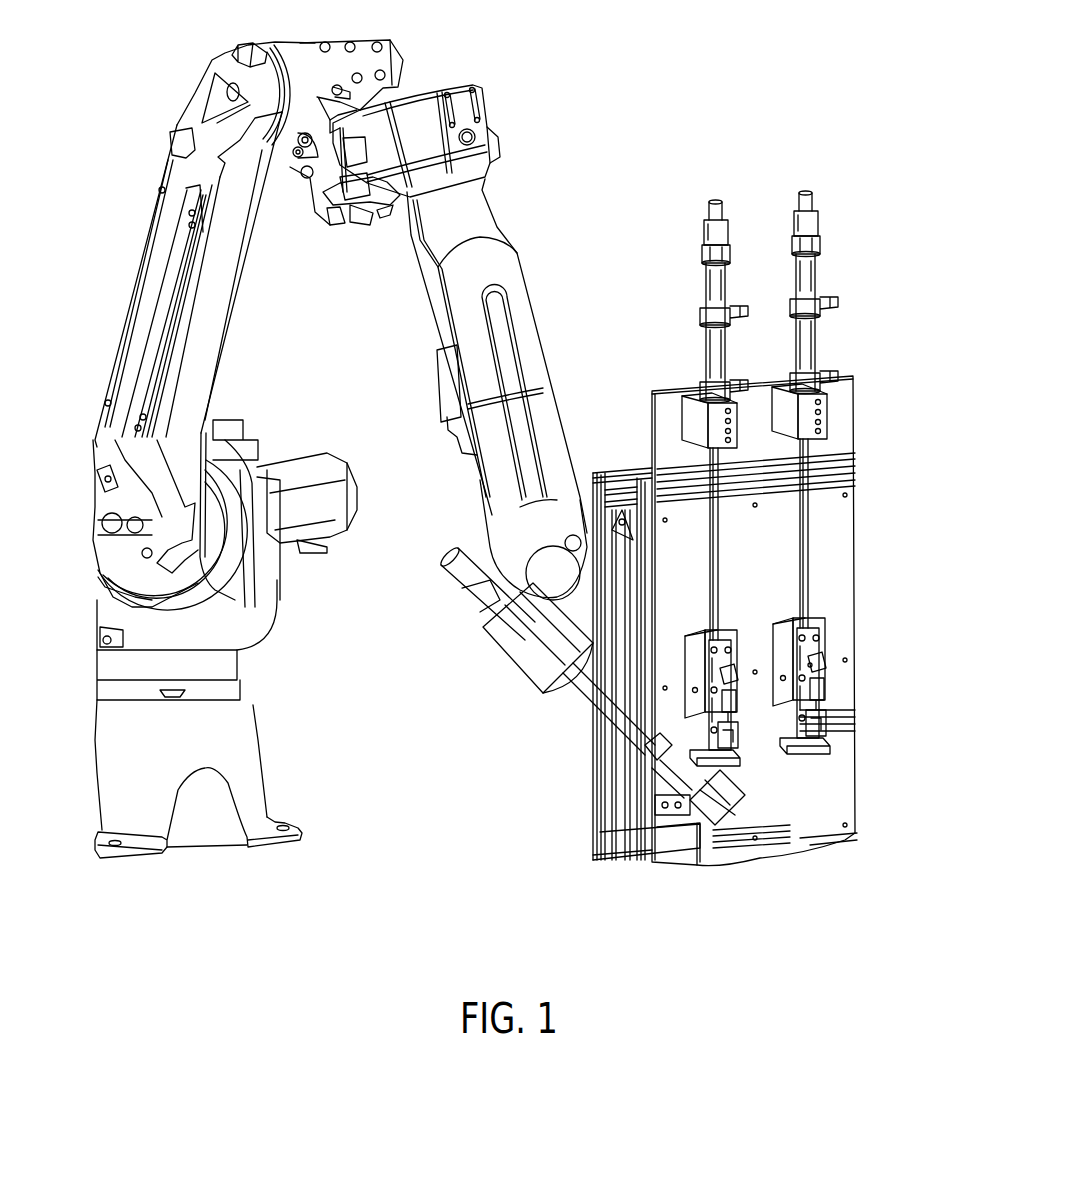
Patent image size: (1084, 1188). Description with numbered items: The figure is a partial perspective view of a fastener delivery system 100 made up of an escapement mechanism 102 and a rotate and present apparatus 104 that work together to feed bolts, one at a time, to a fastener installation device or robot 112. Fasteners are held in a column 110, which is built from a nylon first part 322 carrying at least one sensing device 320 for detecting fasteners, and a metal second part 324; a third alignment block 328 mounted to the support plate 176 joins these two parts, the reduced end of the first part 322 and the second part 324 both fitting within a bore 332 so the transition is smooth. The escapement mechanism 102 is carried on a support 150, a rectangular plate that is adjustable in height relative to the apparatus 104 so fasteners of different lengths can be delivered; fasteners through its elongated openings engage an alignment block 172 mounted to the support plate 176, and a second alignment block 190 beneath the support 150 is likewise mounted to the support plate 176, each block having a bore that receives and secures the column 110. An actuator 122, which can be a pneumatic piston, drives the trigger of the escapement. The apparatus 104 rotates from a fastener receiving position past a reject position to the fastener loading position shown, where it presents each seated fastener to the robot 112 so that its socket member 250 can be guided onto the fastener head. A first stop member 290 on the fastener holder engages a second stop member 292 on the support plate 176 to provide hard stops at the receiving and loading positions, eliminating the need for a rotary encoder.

The fastener delivery system 100 is at (632, 930).
The escapement mechanism 102 is at (840, 598).
The rotate and present apparatus 104 is at (742, 820).
The column 110 is at (720, 554).
The fastener installation device or robot 112 is at (390, 632).
The actuator 122 is at (735, 693).
The support 150 is at (722, 652).
The alignment block 172 is at (700, 632).
The support plate 176 is at (848, 433).
The second alignment block 190 is at (693, 752).
The socket member 250 is at (695, 780).
The first stop member 290 is at (685, 805).
The second stop member 292 is at (660, 800).
The sensing device 320 is at (700, 316).
The first part 322 is at (706, 290).
The second part 324 is at (720, 528).
The third alignment block 328 is at (690, 422).
The bore 332 is at (708, 212).